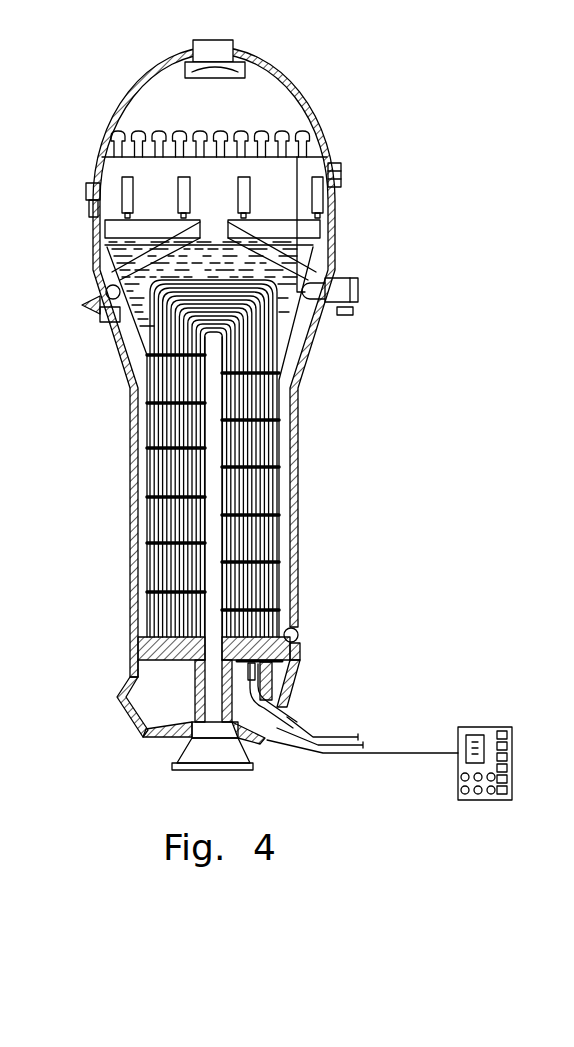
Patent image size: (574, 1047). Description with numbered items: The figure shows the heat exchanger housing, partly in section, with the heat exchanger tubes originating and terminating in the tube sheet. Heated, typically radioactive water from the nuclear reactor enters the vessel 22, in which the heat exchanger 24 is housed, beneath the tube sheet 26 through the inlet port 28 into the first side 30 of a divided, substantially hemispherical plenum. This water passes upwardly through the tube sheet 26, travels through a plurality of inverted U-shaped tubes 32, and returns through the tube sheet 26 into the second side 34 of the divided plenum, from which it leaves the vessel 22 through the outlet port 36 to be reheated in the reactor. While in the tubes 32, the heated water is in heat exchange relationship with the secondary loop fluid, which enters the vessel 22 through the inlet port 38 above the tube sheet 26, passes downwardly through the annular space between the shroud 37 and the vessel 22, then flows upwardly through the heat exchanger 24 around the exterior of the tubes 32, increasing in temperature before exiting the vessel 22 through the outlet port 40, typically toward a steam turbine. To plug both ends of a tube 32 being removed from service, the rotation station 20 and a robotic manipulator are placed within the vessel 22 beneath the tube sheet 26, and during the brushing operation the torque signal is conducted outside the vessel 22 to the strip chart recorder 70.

The rotation station 20 is at (282, 682).
The vessel 22 is at (312, 95).
The heat exchanger 24 is at (213, 458).
The tube sheet 26 is at (296, 630).
The inlet port 28 is at (118, 698).
The first side 30 is at (163, 707).
The inverted U-shaped tubes 32 is at (153, 446).
The second side 34 is at (288, 690).
The outlet port 36 is at (293, 717).
The shroud 37 is at (291, 352).
The inlet port 38 is at (358, 285).
The outlet port 40 is at (231, 42).
The strip chart recorder 70 is at (488, 727).